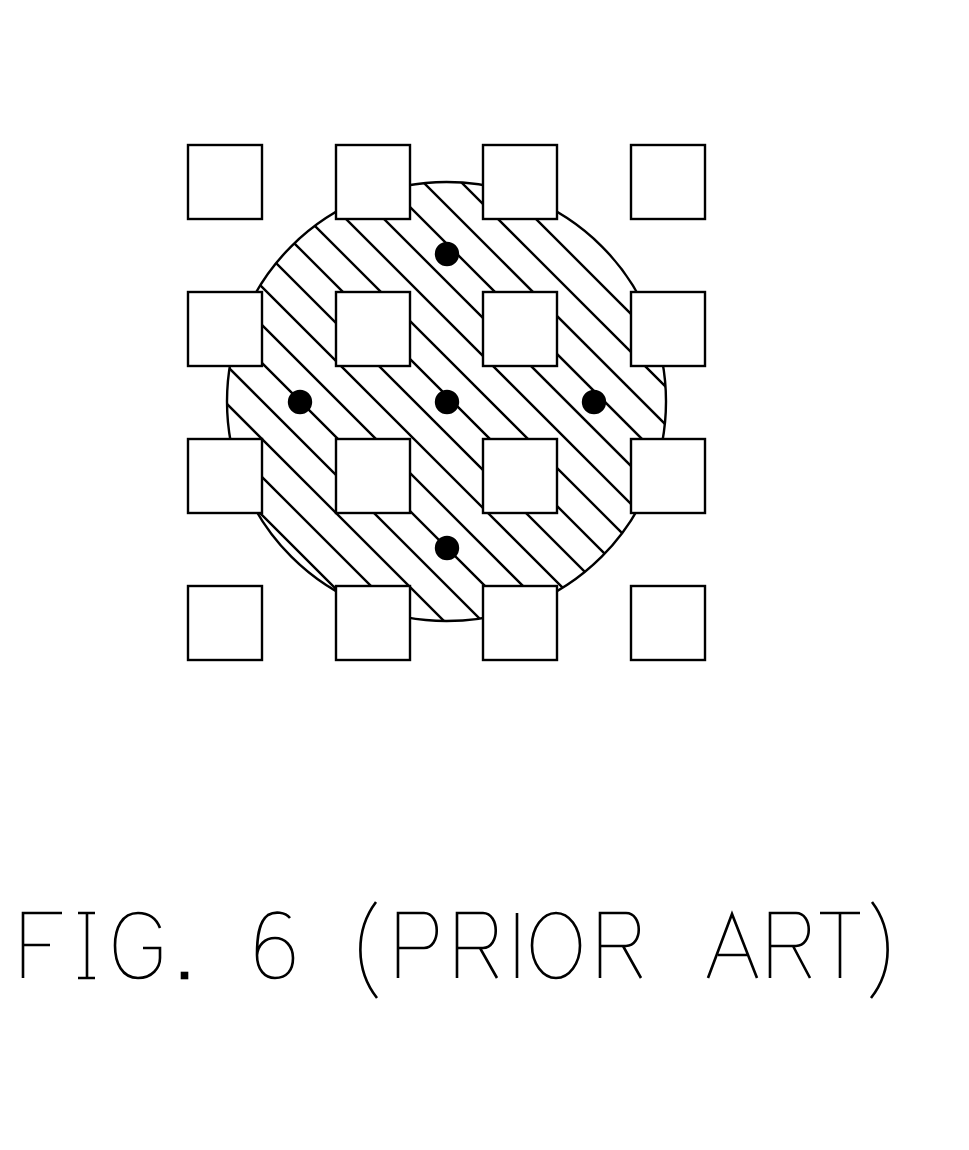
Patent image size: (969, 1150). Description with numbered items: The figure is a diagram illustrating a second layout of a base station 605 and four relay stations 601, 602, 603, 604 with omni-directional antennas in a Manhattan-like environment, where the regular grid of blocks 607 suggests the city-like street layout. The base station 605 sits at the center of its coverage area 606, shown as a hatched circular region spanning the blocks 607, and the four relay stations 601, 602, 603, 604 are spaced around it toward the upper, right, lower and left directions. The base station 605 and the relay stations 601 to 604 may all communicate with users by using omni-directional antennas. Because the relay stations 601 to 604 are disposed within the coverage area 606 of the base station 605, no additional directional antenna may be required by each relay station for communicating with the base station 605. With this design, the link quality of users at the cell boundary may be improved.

The relay station 601 is at (450, 248).
The relay station 602 is at (765, 403).
The relay station 603 is at (446, 553).
The relay station 604 is at (290, 402).
The base station 605 is at (446, 393).
The coverage area 606 is at (323, 220).
The pixel block 607 is at (228, 145).